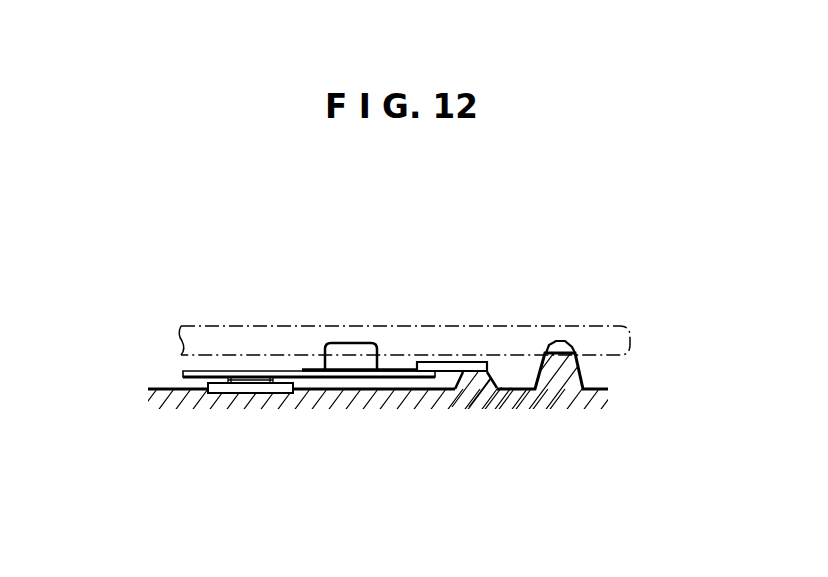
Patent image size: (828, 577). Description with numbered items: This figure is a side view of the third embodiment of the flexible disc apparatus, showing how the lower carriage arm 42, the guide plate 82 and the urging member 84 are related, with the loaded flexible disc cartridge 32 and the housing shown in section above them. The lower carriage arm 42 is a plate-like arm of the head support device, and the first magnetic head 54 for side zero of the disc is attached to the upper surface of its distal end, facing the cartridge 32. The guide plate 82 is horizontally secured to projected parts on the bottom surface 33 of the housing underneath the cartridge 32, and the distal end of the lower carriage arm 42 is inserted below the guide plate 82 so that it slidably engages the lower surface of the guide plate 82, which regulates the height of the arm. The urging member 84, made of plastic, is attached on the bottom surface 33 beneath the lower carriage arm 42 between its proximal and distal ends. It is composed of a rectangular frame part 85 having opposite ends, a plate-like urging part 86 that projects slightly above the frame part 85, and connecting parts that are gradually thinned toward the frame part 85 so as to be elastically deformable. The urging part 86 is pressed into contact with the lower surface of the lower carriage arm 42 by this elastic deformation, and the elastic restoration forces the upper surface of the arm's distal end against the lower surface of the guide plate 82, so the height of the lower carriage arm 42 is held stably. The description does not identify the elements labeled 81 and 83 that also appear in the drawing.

The flexible disc cartridge 32 is at (533, 325).
The bottom surface 33 is at (587, 395).
The lower carriage arm 42 is at (183, 371).
The first magnetic head 54 is at (343, 343).
The raised portion of substrate 81 is at (500, 380).
The guide plate 82 is at (467, 362).
The electrode layer 83 is at (286, 393).
The urging member 84 is at (210, 394).
The rectangular frame part 85 is at (240, 390).
The urging part 86 is at (252, 378).